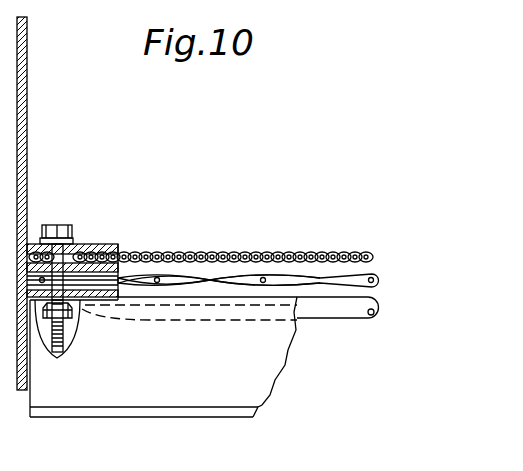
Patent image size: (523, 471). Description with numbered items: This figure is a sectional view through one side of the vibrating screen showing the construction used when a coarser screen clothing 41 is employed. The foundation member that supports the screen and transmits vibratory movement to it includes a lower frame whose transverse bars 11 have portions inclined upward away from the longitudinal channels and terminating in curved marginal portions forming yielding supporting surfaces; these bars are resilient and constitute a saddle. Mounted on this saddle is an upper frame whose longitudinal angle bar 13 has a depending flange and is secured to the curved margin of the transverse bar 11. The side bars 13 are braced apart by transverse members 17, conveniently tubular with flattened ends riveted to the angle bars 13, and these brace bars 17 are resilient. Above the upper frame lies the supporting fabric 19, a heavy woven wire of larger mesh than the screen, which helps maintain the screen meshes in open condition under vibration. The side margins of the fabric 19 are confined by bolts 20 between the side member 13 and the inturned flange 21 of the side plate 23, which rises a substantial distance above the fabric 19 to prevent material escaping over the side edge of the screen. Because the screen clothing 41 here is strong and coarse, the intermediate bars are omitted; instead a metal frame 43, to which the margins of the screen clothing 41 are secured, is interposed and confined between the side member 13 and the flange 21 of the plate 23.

The transverse bar 11 is at (265, 370).
The longitudinal angle bar 13 is at (30, 368).
The transverse brace member 17 is at (140, 322).
The supporting fabric 19 is at (228, 285).
The bolt 20 is at (56, 225).
The inturned flange 21 is at (92, 245).
The side plate 23 is at (28, 143).
The coarse screen clothing 41 is at (208, 252).
The metal frame 43 is at (124, 262).